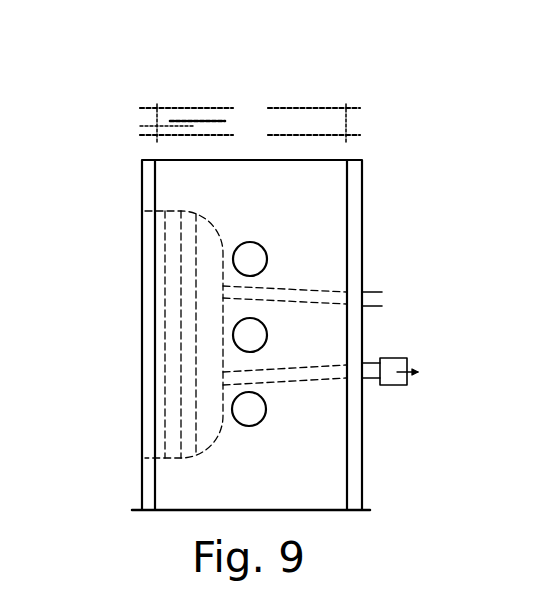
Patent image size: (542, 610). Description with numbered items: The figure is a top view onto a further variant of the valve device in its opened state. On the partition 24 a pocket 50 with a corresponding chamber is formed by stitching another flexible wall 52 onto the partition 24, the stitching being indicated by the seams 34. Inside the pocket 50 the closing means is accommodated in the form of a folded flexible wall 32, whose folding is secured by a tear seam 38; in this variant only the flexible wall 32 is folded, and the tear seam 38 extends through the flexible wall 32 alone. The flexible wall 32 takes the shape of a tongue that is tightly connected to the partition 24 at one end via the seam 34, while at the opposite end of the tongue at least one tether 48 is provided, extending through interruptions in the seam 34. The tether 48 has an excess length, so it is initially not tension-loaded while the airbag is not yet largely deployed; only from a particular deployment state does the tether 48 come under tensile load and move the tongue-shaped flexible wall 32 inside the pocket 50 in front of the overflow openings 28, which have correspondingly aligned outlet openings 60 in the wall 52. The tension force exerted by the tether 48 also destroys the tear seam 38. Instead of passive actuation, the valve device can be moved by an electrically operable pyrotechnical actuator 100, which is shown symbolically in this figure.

The partition 24 is at (323, 134).
The overflow openings 28 is at (250, 137).
The flexible wall 32 is at (207, 122).
The seams 34 is at (157, 108).
The tear seam 38 is at (187, 126).
The tether 48 is at (373, 291).
The pocket 50 is at (294, 127).
The flexible wall 52 is at (191, 117).
The outlet openings 60 is at (250, 110).
The pyrotechnical actuator 100 is at (395, 378).